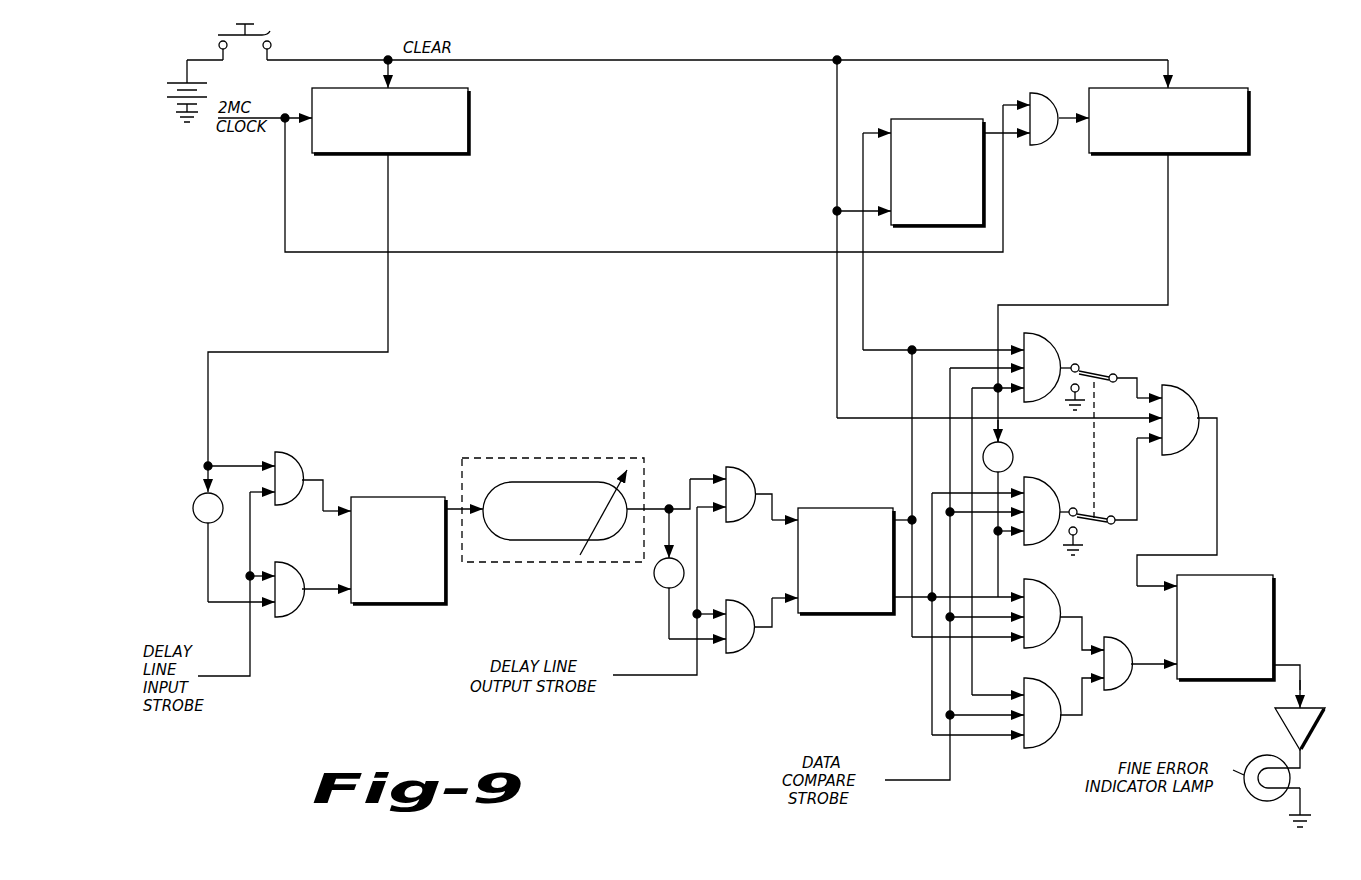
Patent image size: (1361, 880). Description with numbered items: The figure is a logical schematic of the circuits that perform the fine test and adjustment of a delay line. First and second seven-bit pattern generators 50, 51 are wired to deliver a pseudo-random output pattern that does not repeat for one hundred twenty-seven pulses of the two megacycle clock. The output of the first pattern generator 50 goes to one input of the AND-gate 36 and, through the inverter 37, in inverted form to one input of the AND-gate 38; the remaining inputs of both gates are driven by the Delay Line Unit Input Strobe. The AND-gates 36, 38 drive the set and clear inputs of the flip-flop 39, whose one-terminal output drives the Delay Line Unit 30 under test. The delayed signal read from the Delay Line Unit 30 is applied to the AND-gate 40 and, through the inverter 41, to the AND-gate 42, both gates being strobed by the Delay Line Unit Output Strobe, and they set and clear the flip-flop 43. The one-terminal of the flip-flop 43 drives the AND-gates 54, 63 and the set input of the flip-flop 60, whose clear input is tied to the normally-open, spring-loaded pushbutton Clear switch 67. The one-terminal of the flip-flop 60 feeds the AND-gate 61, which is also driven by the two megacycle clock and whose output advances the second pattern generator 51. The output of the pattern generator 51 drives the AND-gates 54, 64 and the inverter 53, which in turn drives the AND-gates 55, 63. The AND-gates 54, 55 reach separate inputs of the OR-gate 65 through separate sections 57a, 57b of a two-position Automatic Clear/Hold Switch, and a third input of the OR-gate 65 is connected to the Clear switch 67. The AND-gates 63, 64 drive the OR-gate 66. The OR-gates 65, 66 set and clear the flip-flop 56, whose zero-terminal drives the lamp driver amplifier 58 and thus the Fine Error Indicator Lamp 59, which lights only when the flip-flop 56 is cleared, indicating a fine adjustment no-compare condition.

The Delay Line Unit 30 is at (648, 455).
The AND-gate 36 is at (296, 456).
The inverter 37 is at (193, 508).
The AND-gate 38 is at (292, 616).
The flip-flop 39 is at (405, 497).
The AND-gate 40 is at (748, 470).
The inverter 41 is at (654, 576).
The AND-gate 42 is at (744, 652).
The flip-flop 43 is at (852, 508).
The first pattern generator 50 is at (428, 88).
The second pattern generator 51 is at (1210, 88).
The inverter 53 is at (1010, 447).
The AND-gate 54 is at (1055, 335).
The AND-gate 55 is at (1052, 480).
The flip-flop 56 is at (1232, 575).
The section of Automatic Clear/Hold Switch 57a is at (1098, 370).
The section of Automatic Clear/Hold Switch 57b is at (1100, 524).
The lamp driver amplifier 58 is at (1318, 708).
The Fine Error Indicator Lamp 59 is at (1255, 797).
The flip-flop 60 is at (945, 119).
The AND-gate 61 is at (1047, 146).
The AND-gate 63 is at (1048, 583).
The AND-gate 64 is at (1052, 740).
The OR-gate 65 is at (1190, 396).
The OR-gate 66 is at (1118, 690).
The Clear switch 67 is at (312, 31).